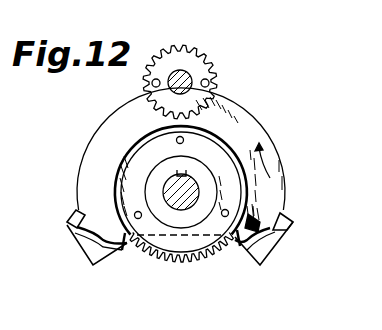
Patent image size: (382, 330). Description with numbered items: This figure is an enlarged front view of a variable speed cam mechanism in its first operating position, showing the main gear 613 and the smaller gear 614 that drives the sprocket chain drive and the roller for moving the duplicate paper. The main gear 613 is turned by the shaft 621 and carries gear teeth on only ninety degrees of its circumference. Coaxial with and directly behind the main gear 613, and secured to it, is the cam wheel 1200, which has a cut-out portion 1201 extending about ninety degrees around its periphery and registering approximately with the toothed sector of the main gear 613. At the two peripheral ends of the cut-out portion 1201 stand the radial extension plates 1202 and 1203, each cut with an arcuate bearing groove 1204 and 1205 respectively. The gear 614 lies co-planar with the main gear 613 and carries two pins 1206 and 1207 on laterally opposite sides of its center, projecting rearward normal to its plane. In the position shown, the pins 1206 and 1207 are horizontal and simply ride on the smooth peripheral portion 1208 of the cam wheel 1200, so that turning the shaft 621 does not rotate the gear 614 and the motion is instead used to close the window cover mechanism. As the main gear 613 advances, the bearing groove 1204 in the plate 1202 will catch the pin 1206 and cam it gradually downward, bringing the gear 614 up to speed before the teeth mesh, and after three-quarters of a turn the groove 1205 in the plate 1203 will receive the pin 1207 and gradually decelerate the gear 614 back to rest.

The gear 614 is at (208, 62).
The pin 1206 is at (209, 83).
The pin 1207 is at (152, 84).
The smooth peripheral portion 1208 is at (258, 118).
The shaft 621 is at (172, 187).
The cam wheel 1200 is at (280, 213).
The arcuate bearing groove 1204 is at (296, 223).
The radial extension plate 1202 is at (274, 249).
The main gear 613 is at (201, 259).
The cut-out portion 1201 is at (163, 236).
The radial extension plate 1203 is at (107, 263).
The arcuate bearing groove 1205 is at (68, 224).